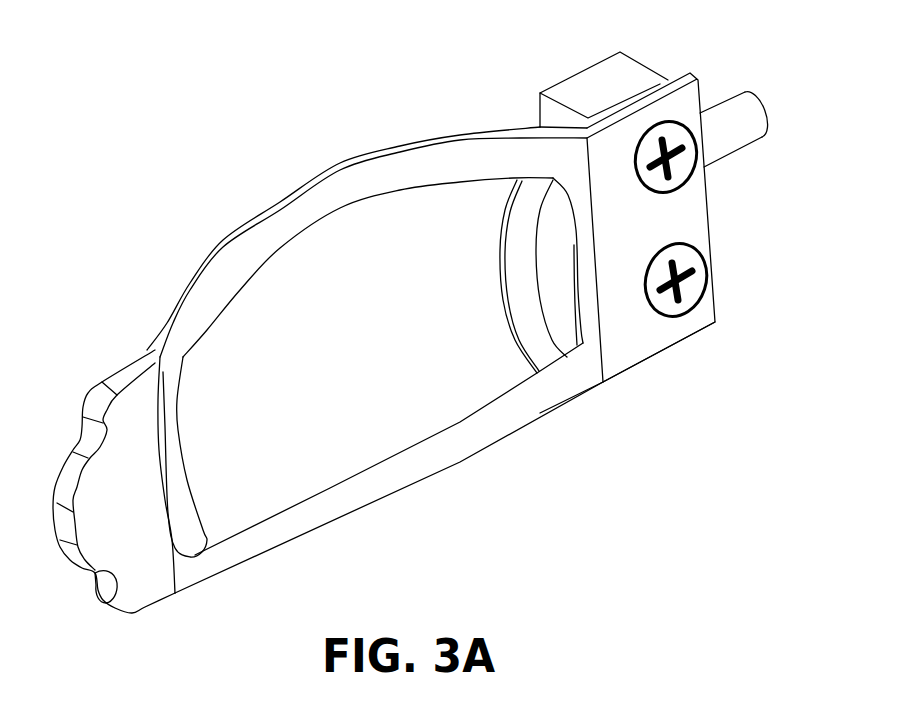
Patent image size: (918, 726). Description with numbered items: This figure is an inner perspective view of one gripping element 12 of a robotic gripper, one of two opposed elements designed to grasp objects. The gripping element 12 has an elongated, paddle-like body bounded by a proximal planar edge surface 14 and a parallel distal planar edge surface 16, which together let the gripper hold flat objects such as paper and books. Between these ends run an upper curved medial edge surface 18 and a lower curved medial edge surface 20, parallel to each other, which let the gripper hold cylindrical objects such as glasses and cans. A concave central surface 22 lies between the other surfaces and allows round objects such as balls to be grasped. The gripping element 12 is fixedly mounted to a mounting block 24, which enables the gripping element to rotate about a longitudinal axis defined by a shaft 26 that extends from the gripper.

The gripping element 12 is at (133, 211).
The proximal planar edge surface 14 is at (667, 330).
The distal planar edge surface 16 is at (143, 588).
The upper curved medial edge surface 18 is at (327, 192).
The lower curved medial edge surface 20 is at (416, 468).
The concave central surface 22 is at (348, 358).
The mounting block 24 is at (589, 86).
The shaft 26 is at (732, 145).